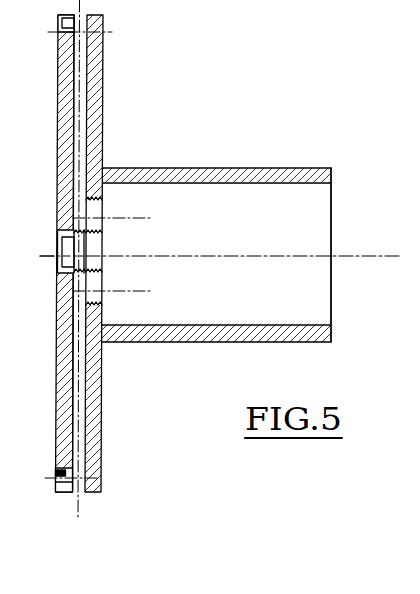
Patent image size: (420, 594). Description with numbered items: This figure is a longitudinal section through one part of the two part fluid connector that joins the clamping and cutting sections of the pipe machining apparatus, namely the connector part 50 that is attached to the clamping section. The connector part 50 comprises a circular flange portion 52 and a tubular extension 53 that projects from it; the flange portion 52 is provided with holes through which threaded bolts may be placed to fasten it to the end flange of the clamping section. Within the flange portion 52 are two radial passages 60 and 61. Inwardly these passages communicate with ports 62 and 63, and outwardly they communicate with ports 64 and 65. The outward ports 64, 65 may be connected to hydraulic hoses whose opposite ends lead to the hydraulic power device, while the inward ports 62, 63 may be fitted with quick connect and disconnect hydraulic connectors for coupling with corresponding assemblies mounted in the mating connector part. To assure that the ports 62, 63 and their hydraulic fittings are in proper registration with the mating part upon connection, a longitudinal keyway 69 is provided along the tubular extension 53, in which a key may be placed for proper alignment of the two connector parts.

The connector part 50 is at (170, 158).
The flange portion 52 is at (93, 63).
The tubular extension 53 is at (248, 172).
The radial passage 60 is at (97, 378).
The radial passage 61 is at (82, 128).
The port 62 is at (93, 283).
The port 63 is at (93, 212).
The port 64 is at (65, 472).
The port 65 is at (78, 23).
The longitudinal keyway 69 is at (303, 252).